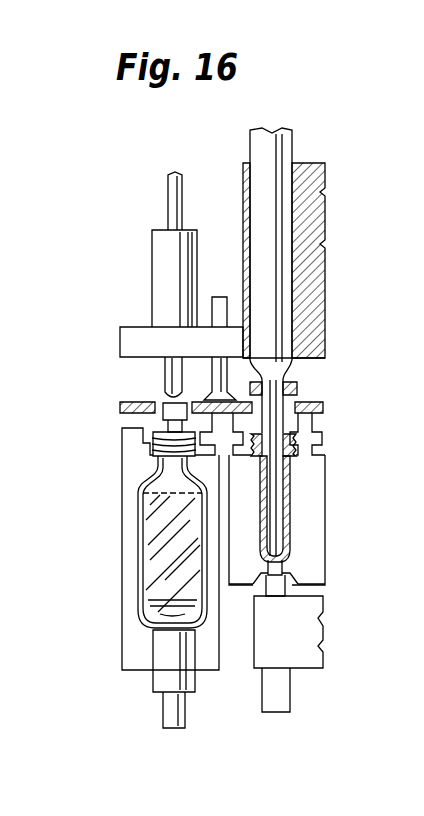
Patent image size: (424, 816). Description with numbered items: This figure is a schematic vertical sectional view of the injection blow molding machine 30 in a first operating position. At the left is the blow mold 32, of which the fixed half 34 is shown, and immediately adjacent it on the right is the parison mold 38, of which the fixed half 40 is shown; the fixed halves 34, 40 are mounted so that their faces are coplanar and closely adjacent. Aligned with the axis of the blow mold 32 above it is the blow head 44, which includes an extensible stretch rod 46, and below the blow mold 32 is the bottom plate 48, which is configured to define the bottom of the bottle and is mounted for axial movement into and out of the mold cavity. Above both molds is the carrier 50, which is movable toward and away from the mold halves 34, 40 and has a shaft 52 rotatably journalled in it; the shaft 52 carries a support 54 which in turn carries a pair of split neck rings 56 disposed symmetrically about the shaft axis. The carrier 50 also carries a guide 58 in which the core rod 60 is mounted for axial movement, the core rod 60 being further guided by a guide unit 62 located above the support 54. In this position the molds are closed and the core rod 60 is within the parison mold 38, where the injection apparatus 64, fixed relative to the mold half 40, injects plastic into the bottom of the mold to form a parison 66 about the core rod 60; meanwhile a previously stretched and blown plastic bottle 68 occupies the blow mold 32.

The machine 30 is at (338, 378).
The blow mold 32 is at (118, 524).
The fixed half 34 is at (132, 576).
The parison mold 38 is at (328, 510).
The fixed half 40 is at (318, 562).
The blow head 44 is at (175, 374).
The stretch rod 46 is at (166, 199).
The bottom plate 48 is at (166, 678).
The carrier 50 is at (136, 326).
The shaft 52 is at (215, 384).
The support 54 is at (322, 408).
The split neck rings 56 is at (152, 452).
The guide 58 is at (318, 206).
The core rod 60 is at (298, 478).
The guide unit 62 is at (302, 378).
The injection apparatus 64 is at (325, 626).
The parison 66 is at (300, 532).
The plastic bottle 68 is at (165, 606).